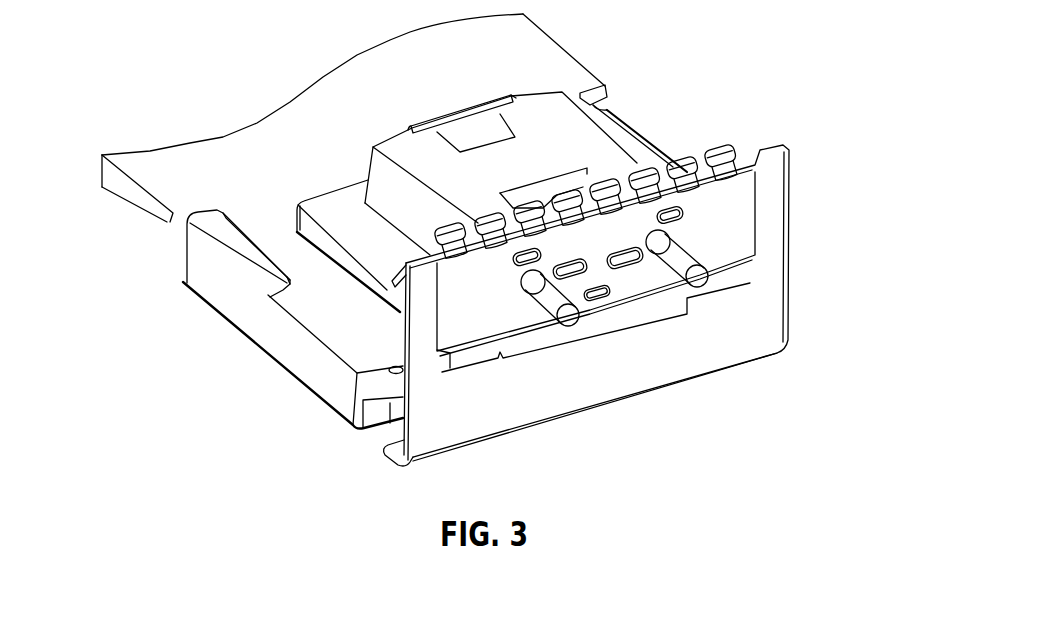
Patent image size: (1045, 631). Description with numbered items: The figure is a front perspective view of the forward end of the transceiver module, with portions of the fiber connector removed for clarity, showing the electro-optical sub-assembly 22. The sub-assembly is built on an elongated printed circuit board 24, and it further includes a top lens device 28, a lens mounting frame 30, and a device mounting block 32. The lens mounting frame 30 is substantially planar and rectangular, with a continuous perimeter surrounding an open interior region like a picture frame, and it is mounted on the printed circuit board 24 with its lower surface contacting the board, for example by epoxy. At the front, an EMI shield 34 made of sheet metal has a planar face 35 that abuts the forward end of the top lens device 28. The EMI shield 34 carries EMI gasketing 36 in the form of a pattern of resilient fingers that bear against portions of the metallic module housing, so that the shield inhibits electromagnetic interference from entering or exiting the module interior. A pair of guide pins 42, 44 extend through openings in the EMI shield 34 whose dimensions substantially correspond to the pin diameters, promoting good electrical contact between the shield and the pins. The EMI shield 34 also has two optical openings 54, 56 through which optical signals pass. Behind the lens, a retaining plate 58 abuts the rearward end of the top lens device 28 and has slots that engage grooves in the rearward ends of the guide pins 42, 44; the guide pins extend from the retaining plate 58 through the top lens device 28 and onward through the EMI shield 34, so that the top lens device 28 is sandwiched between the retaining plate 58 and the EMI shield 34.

The electro-optical sub-assembly 22 is at (658, 54).
The printed circuit board 24 is at (143, 211).
The top lens device 28 is at (626, 165).
The lens mounting frame 30 is at (347, 293).
The device mounting block 32 is at (227, 311).
The EMI shield 34 is at (385, 462).
The planar face 35 is at (790, 245).
The EMI gasketing 36 is at (683, 158).
The guide pin 42 is at (570, 326).
The guide pin 44 is at (704, 283).
The optical opening 54 is at (635, 270).
The optical opening 56 is at (600, 300).
The retaining plate 58 is at (510, 99).